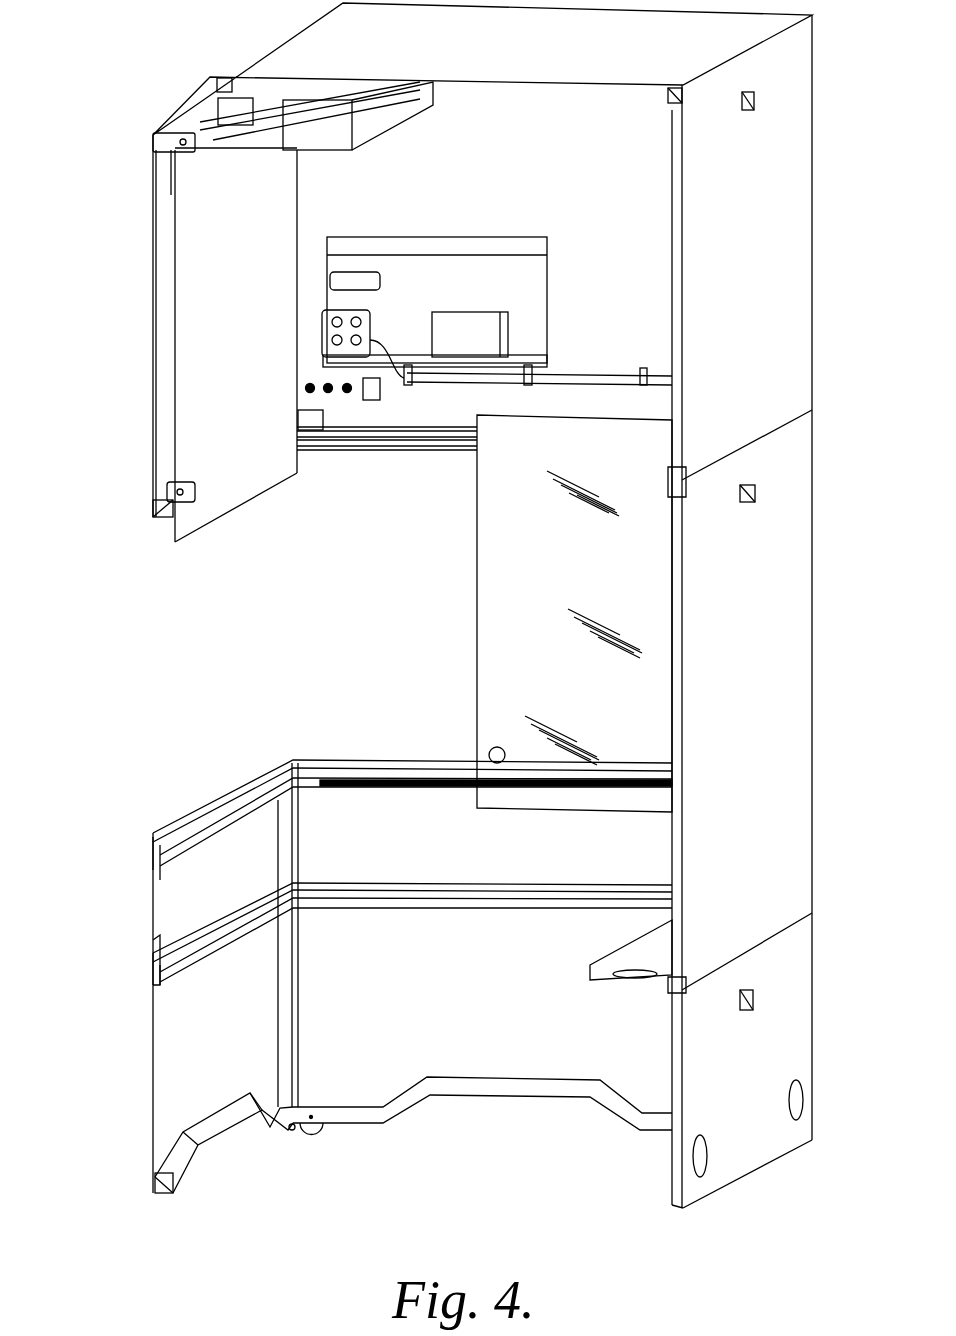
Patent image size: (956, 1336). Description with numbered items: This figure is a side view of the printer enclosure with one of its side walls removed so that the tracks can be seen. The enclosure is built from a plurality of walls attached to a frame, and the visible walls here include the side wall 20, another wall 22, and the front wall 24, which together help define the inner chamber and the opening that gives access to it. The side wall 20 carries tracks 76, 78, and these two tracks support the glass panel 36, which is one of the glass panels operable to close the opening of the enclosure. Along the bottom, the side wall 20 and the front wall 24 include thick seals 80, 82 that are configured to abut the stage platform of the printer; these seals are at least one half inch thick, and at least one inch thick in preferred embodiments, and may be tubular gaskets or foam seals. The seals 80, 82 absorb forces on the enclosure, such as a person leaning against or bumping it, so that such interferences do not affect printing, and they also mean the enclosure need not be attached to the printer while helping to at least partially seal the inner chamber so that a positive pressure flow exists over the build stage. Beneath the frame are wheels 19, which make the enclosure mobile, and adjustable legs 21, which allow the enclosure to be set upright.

The side wall 20 is at (625, 160).
The track 76 is at (386, 437).
The glass panel 36 is at (512, 530).
The track 78 is at (388, 775).
The seal 80 is at (430, 897).
The seal 82 is at (183, 947).
The front wall 24 is at (165, 1090).
The adjustable leg 21 is at (292, 1127).
The wheel 19 is at (310, 1127).
The wall 22 is at (225, 337).